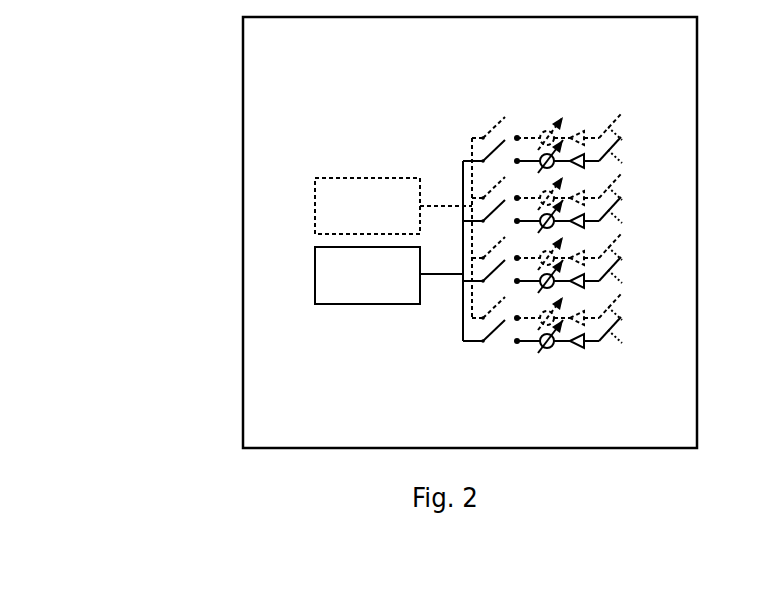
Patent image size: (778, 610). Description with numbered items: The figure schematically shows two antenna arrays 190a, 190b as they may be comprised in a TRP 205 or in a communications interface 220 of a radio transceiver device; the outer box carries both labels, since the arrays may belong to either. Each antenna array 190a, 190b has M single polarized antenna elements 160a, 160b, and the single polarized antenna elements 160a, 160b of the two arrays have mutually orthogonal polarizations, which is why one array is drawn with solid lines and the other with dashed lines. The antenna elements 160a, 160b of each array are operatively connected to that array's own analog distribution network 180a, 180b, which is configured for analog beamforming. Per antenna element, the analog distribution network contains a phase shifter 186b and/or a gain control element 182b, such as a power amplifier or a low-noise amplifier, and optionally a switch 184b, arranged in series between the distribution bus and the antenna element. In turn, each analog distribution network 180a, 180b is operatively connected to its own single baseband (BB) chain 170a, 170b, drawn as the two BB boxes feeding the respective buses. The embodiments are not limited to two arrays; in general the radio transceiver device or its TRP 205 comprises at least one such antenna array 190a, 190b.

The communications interface 220 is at (361, 232).
The TRP 205 is at (243, 237).
The baseband chain 170a is at (328, 295).
The baseband chain 170b is at (340, 190).
The antenna array 190a is at (496, 249).
The antenna array 190b is at (486, 238).
The analog distribution network 180a is at (463, 343).
The analog distribution network 180b is at (480, 137).
The switch 184b is at (503, 118).
The phase shifter 186b is at (552, 125).
The gain control element 182b is at (578, 130).
The single polarized antenna elements 160a is at (617, 138).
The single polarized antenna elements 160b is at (618, 342).